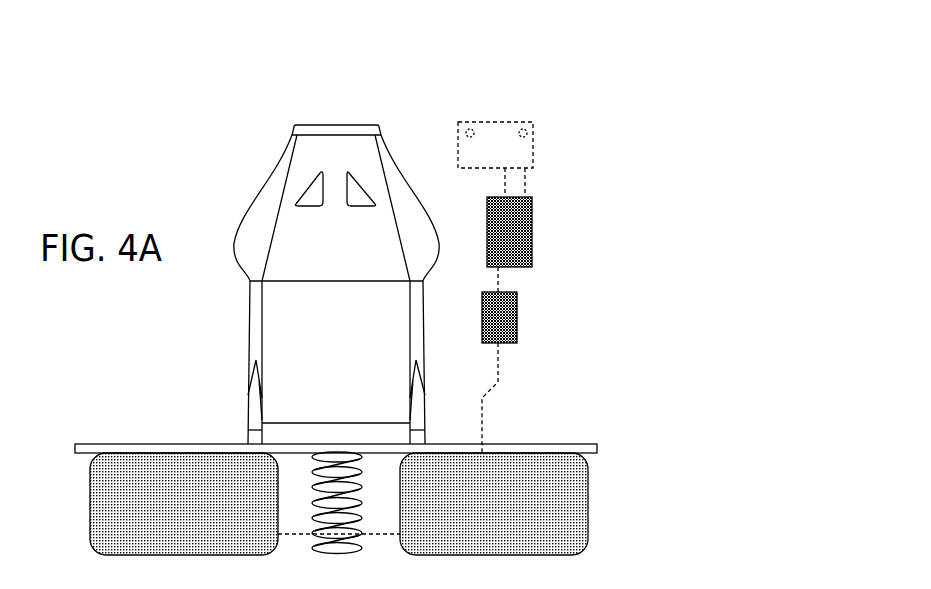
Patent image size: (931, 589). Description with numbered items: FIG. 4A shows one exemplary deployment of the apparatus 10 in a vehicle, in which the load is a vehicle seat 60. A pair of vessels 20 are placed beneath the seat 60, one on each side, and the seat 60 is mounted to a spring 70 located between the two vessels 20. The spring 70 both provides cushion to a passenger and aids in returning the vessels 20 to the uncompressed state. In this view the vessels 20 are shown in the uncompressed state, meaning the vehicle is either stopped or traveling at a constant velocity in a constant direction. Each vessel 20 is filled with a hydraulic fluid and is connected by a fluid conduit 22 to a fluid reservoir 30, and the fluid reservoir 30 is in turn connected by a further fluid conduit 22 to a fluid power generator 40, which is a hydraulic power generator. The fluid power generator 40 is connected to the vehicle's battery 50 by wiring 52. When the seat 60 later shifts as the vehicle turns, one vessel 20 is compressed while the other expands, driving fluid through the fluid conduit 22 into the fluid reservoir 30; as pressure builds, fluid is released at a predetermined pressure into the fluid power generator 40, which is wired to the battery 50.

The apparatus 10 is at (662, 145).
The vessels 20 is at (110, 503).
The fluid conduit 22 is at (500, 283).
The fluid reservoir 30 is at (517, 312).
The fluid power generator 40 is at (530, 235).
The battery 50 is at (518, 152).
The wiring 52 is at (518, 188).
The seat 60 is at (382, 223).
The spring 70 is at (358, 548).